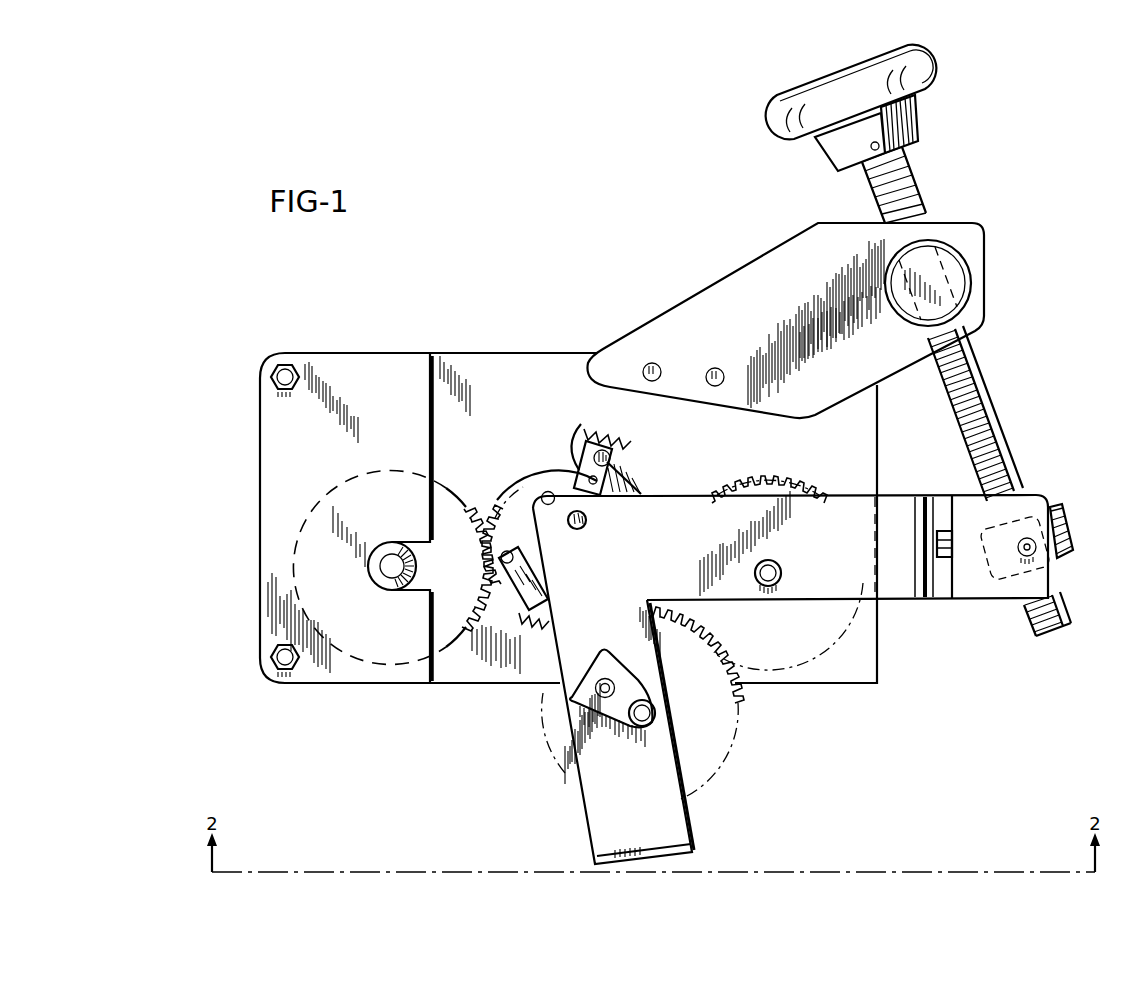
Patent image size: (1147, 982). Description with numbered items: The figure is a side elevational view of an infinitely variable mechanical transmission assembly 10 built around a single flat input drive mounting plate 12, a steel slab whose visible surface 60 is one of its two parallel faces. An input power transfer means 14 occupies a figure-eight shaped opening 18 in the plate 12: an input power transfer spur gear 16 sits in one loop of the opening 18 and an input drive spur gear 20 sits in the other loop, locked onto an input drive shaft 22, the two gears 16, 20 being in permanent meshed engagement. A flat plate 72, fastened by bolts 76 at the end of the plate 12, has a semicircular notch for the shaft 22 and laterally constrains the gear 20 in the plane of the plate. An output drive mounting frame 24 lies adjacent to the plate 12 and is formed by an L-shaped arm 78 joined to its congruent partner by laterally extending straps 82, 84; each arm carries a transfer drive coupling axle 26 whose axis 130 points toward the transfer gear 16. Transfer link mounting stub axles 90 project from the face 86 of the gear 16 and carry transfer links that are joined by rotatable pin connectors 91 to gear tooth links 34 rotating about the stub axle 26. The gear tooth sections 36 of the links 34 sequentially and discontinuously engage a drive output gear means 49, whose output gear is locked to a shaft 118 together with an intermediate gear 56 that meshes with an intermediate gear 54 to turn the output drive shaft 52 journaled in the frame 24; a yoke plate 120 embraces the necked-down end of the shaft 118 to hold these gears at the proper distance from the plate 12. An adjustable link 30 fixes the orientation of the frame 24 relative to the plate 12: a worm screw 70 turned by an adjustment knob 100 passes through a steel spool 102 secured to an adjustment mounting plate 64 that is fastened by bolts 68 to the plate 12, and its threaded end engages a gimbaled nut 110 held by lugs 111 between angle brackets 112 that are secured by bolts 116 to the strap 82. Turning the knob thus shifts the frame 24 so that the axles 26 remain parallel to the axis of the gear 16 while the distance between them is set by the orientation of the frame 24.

The infinitely variable mechanical transmission assembly 10 is at (1063, 204).
The input drive mounting plate 12 is at (471, 354).
The input power transfer means 14 is at (518, 467).
The input power transfer spur gear 16 is at (549, 474).
The opening 18 is at (483, 627).
The input drive spur gear 20 is at (455, 494).
The input drive shaft 22 is at (368, 584).
The output drive mounting frame 24 is at (890, 600).
The transfer drive coupling axles 26 is at (588, 527).
The adjustable link 30 is at (995, 374).
The gear tooth links 34 is at (620, 470).
The gear tooth sections 36 is at (627, 442).
The drive output gear means 49 is at (748, 680).
The output drive shaft 52 is at (781, 563).
The intermediate gears 54 is at (820, 648).
The intermediate gears 56 is at (722, 762).
The surface 60 is at (558, 368).
The adjustment mounting plate 64 is at (741, 292).
The bolts 68 is at (715, 368).
The worm screw 70 is at (913, 193).
The flat plate 72 is at (272, 470).
The bolts 76 is at (272, 380).
The arm 78 is at (851, 500).
The strap 82 is at (918, 496).
The strap 84 is at (680, 851).
The face 86 is at (503, 518).
The transfer link mounting stub axles 90 is at (512, 553).
The rotatable pin connectors 91 is at (579, 428).
The adjustment knob 100 is at (946, 68).
The steel spool 102 is at (972, 279).
The nut 110 is at (1074, 548).
The lugs 111 is at (1018, 540).
The angle bracket 112 is at (990, 600).
The bolts 116 is at (946, 558).
The shaft 118 is at (645, 727).
The yoke plates 120 is at (583, 702).
The axis 130 is at (587, 520).